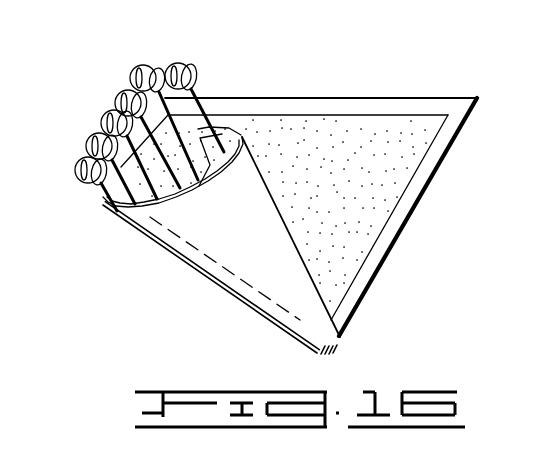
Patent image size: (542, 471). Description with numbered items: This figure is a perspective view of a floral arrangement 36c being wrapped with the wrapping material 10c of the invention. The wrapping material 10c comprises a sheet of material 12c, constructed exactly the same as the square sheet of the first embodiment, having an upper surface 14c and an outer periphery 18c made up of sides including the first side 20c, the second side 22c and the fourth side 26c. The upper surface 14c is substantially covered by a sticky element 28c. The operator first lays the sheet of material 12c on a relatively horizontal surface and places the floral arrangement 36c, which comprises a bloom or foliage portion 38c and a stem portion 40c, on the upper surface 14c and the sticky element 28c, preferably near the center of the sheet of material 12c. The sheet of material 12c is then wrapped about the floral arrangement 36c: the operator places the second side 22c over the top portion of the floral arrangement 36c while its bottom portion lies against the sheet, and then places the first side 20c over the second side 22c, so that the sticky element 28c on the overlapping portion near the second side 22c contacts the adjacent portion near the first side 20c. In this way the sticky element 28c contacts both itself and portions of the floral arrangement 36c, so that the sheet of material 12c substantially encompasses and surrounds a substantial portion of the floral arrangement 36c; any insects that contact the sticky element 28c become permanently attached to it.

The wrapping material 10c is at (321, 177).
The sheet of material 12c is at (232, 72).
The upper surface 14c is at (442, 147).
The outer periphery 18c is at (367, 298).
The first side 20c is at (397, 242).
The second side 22c is at (158, 220).
The fourth side 26c is at (263, 97).
The sticky element 28c is at (353, 213).
The floral arrangement 36c is at (175, 43).
The bloom or foliage portion 38c is at (128, 88).
The stem portion 40c is at (340, 350).